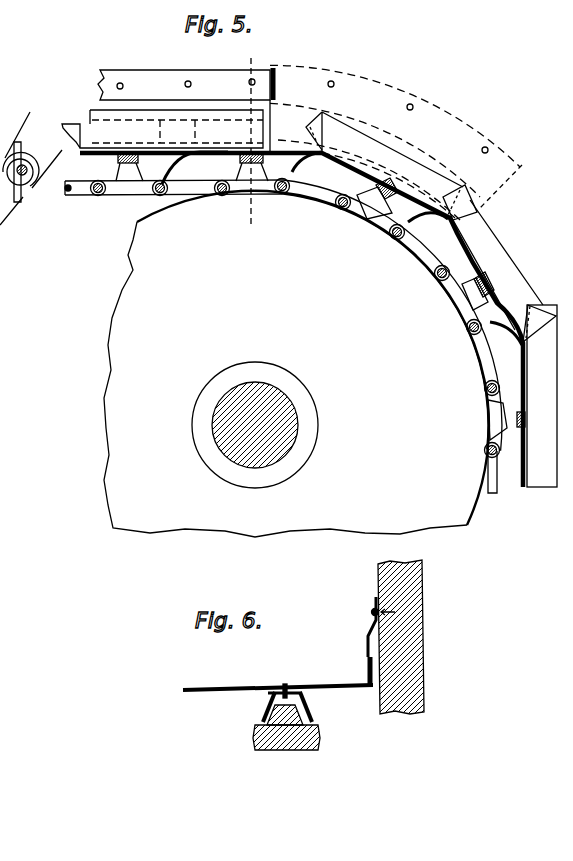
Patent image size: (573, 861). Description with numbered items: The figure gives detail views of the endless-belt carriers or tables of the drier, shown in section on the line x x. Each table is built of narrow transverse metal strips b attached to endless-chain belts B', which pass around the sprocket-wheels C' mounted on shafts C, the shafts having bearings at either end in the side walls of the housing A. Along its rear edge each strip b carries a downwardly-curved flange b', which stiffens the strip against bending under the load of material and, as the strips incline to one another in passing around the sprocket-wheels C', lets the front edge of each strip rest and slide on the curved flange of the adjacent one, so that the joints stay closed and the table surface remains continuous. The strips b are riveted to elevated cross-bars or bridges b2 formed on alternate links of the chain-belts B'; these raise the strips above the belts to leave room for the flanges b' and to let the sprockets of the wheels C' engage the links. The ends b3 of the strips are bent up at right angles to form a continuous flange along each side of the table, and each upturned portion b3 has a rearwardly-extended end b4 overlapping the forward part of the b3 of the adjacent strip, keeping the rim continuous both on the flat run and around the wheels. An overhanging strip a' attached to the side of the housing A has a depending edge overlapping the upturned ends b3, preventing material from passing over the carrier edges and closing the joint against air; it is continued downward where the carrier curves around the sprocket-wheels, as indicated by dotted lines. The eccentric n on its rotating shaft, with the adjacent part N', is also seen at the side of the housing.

In FIG. 5, the overhanging strip a' is at (166, 109).
In FIG. 6, the overhanging strip a' is at (367, 627).
In FIG. 5, the transverse strip b is at (324, 320).
In FIG. 6, the transverse strip b is at (278, 677).
In FIG. 5, the downwardly-curved flange b' is at (342, 254).
In FIG. 5, the cross-bar b2 is at (116, 162).
In FIG. 5, the upturned end b3 is at (270, 130).
In FIG. 6, the upturned end b3 is at (368, 668).
In FIG. 5, the rearwardly-extended end b4 is at (559, 318).
In FIG. 5, the endless-chain belt B' is at (283, 349).
In FIG. 6, the endless-chain belt B' is at (311, 721).
In FIG. 5, the shaft C is at (271, 425).
In FIG. 5, the sprocket-wheel C' is at (296, 364).
In FIG. 6, the sprocket-wheel C' is at (269, 735).
In FIG. 5, the eccentric n is at (18, 172).
In FIG. 5, the bracket N' is at (31, 168).
In FIG. 6, the housing A is at (405, 636).
In FIG. 5, the section line x x is at (254, 137).